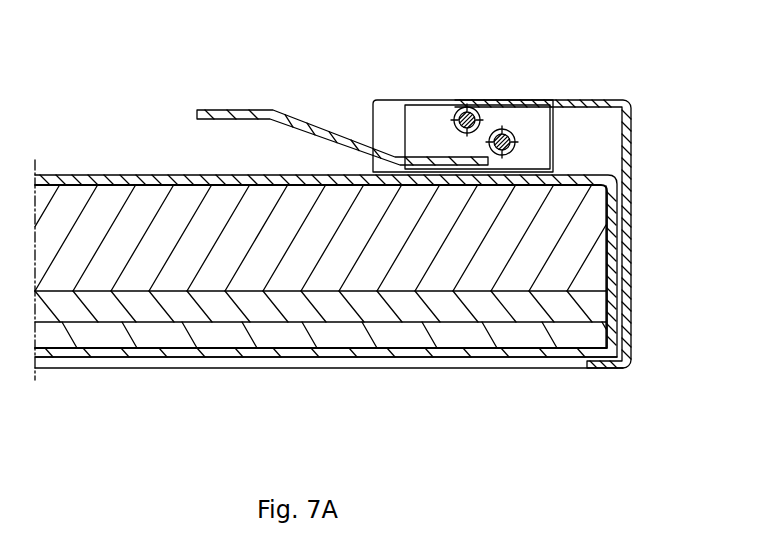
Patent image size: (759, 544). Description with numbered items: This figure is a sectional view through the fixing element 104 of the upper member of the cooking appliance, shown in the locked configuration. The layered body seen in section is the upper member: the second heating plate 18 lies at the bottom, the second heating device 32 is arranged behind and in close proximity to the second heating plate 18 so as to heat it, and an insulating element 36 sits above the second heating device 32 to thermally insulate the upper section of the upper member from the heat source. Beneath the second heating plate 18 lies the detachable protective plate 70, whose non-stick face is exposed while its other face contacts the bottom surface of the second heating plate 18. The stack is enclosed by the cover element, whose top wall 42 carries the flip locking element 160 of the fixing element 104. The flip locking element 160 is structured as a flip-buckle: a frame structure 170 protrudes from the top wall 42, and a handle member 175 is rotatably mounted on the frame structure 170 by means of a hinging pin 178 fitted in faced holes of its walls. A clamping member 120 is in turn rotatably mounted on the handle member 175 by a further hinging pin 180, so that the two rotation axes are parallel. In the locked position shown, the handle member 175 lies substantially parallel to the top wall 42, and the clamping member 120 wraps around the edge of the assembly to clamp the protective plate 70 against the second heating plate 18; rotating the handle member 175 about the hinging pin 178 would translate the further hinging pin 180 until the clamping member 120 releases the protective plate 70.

The fixing element 104 is at (662, 305).
The top wall 42 is at (100, 175).
The second heating plate 18 is at (355, 335).
The second heating device 32 is at (450, 307).
The insulating element 36 is at (545, 278).
The protective plate 70 is at (234, 353).
The clamping member 120 is at (632, 153).
The flip locking element 160 is at (331, 89).
The frame structure 170 is at (390, 100).
The handle member 175 is at (236, 109).
The hinging pin 178 is at (505, 129).
The further hinging pin 180 is at (470, 107).